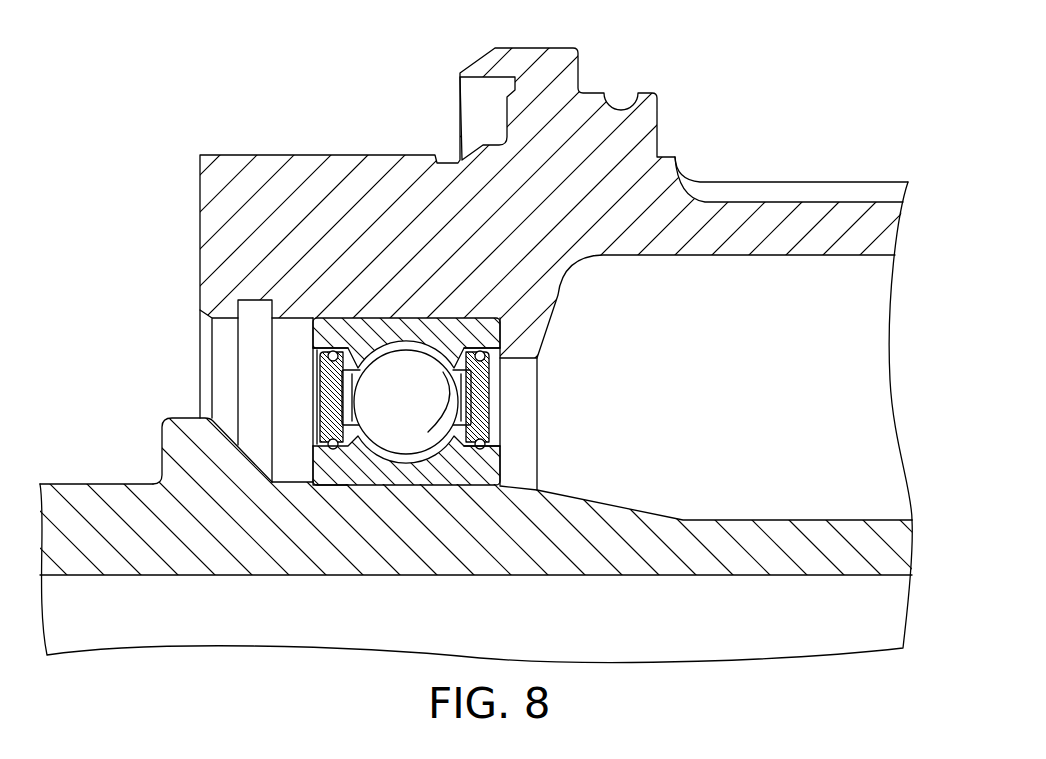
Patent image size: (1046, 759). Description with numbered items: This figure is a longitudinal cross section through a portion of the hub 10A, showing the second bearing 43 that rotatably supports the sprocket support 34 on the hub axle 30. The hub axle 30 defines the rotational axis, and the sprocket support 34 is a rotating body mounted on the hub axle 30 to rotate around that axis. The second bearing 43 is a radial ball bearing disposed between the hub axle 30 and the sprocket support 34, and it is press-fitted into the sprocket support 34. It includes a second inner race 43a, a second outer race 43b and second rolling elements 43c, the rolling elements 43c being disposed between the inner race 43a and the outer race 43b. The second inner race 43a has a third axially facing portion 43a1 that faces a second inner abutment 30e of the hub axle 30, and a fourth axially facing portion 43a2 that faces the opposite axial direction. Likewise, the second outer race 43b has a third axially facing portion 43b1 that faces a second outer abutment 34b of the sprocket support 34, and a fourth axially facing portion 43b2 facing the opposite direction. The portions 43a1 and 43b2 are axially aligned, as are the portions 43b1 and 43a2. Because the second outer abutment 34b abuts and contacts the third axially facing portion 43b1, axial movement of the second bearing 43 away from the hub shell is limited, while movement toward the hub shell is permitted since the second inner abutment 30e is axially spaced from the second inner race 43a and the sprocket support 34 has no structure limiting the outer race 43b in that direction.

The hub 10A is at (770, 47).
The hub axle 30 is at (777, 520).
The second inner abutment 30e is at (240, 447).
The sprocket support 34 is at (812, 172).
The second outer abutment 34b is at (497, 388).
The second bearing 43 is at (300, 377).
The second inner race 43a is at (392, 484).
The third axially facing portion 43a1 is at (313, 483).
The fourth axially facing portion 43a2 is at (500, 467).
The second outer race 43b is at (387, 318).
The third axially facing portion 43b1 is at (500, 332).
The fourth axially facing portion 43b2 is at (313, 343).
The second rolling elements 43c is at (407, 430).